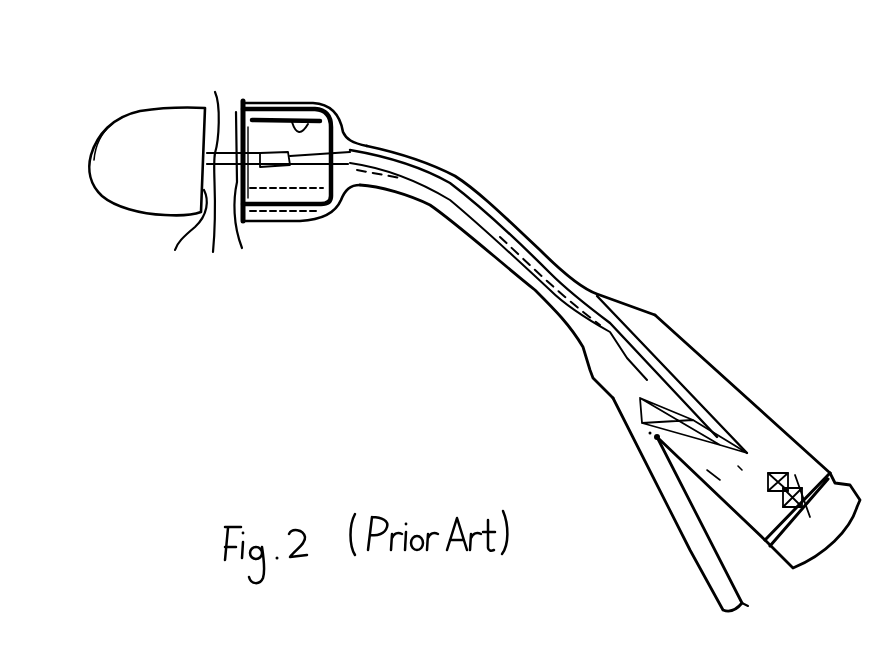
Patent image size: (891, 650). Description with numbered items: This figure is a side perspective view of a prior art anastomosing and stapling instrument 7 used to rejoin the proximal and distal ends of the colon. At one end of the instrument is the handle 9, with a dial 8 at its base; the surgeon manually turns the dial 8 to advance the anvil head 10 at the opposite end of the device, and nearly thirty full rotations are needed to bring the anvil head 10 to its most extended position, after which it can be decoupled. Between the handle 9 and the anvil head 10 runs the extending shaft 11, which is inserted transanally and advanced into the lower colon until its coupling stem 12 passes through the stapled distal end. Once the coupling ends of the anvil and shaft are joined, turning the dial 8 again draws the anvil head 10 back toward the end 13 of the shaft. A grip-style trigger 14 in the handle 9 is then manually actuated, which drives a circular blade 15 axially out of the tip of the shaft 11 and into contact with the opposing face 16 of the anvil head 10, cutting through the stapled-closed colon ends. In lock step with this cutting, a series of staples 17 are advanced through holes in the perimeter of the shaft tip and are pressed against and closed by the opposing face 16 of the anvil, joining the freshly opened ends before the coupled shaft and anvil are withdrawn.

The anastomosing and stapling instrument 7 is at (631, 155).
The dial 8 is at (850, 483).
The handle 9 is at (703, 365).
The anvil head 10 is at (160, 117).
The extending shaft 11 is at (478, 219).
The coupling stem 12 is at (273, 192).
The end of the shaft 13 is at (275, 100).
The grip-style trigger 14 is at (685, 511).
The circular blade 15 is at (316, 119).
The opposing face 16 is at (179, 241).
The staples 17 is at (248, 199).